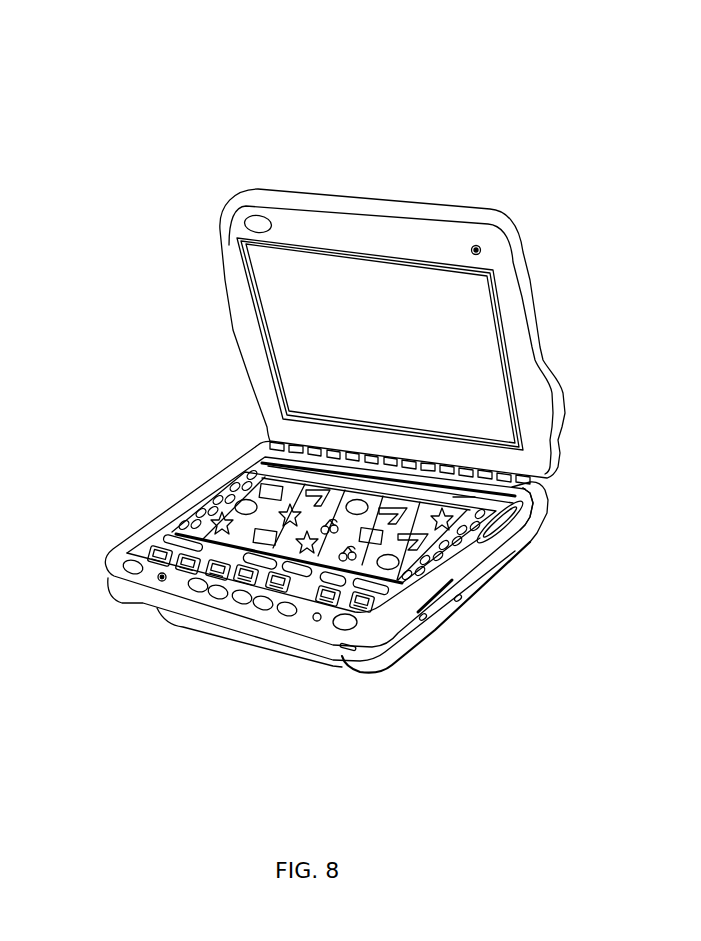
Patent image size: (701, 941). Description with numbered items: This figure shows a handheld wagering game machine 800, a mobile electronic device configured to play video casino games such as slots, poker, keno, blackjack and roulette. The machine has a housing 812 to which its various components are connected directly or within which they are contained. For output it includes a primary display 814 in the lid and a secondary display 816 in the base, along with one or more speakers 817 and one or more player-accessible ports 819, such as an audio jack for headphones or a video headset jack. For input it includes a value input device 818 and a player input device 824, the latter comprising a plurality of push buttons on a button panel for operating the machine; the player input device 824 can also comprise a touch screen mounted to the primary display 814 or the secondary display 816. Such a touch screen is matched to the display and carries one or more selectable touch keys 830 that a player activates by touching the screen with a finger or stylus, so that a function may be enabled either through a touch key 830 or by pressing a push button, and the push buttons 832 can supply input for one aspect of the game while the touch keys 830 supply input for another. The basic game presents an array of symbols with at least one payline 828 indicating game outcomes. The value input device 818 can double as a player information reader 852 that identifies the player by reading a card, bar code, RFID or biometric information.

The wagering game machine 800 is at (108, 22).
The housing 812 is at (213, 483).
The primary display 814 is at (257, 453).
The secondary display 816 is at (283, 324).
The speakers 817 is at (348, 631).
The value input device 818 is at (460, 595).
The player-accessible ports 819 is at (163, 582).
The player input device 824 is at (238, 604).
The payline 828 is at (545, 481).
The touch keys 830 is at (437, 618).
The push buttons 832 is at (487, 557).
The player information reader 852 is at (535, 523).